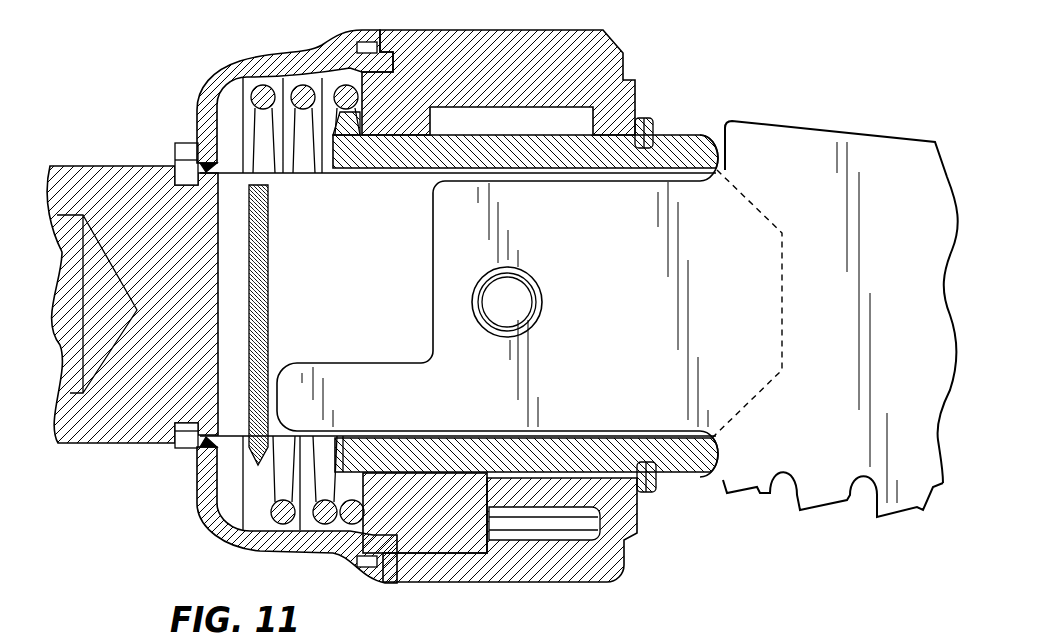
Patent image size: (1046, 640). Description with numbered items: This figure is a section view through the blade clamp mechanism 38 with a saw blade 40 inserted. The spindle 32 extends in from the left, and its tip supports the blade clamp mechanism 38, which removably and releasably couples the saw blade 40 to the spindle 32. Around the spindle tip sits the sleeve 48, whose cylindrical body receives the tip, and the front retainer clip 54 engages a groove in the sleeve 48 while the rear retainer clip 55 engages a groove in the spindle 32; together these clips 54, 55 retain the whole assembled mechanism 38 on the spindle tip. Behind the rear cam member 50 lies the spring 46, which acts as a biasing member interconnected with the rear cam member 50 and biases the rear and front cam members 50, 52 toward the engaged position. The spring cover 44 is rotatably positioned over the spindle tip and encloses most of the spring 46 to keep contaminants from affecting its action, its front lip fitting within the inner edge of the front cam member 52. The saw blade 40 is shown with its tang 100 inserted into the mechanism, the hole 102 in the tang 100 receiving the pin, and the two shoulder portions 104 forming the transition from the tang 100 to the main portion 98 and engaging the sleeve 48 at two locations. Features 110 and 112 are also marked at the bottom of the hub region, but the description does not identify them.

The spindle 32 is at (107, 172).
The blade clamp mechanism 38 is at (188, 539).
The saw blade 40 is at (830, 97).
The spring cover 44 is at (213, 78).
The spring 46 is at (263, 90).
The sleeve 48 is at (700, 150).
The rear cam member 50 is at (450, 528).
The front cam member 52 is at (560, 573).
The front retainer clip 54 is at (660, 492).
The rear retainer clip 55 is at (187, 150).
The main portion 98 is at (817, 447).
The tang 100 is at (433, 260).
The hole 102 is at (538, 272).
The shoulder portions 104 is at (714, 135).
The spline 110 is at (543, 585).
The spline 112 is at (517, 578).